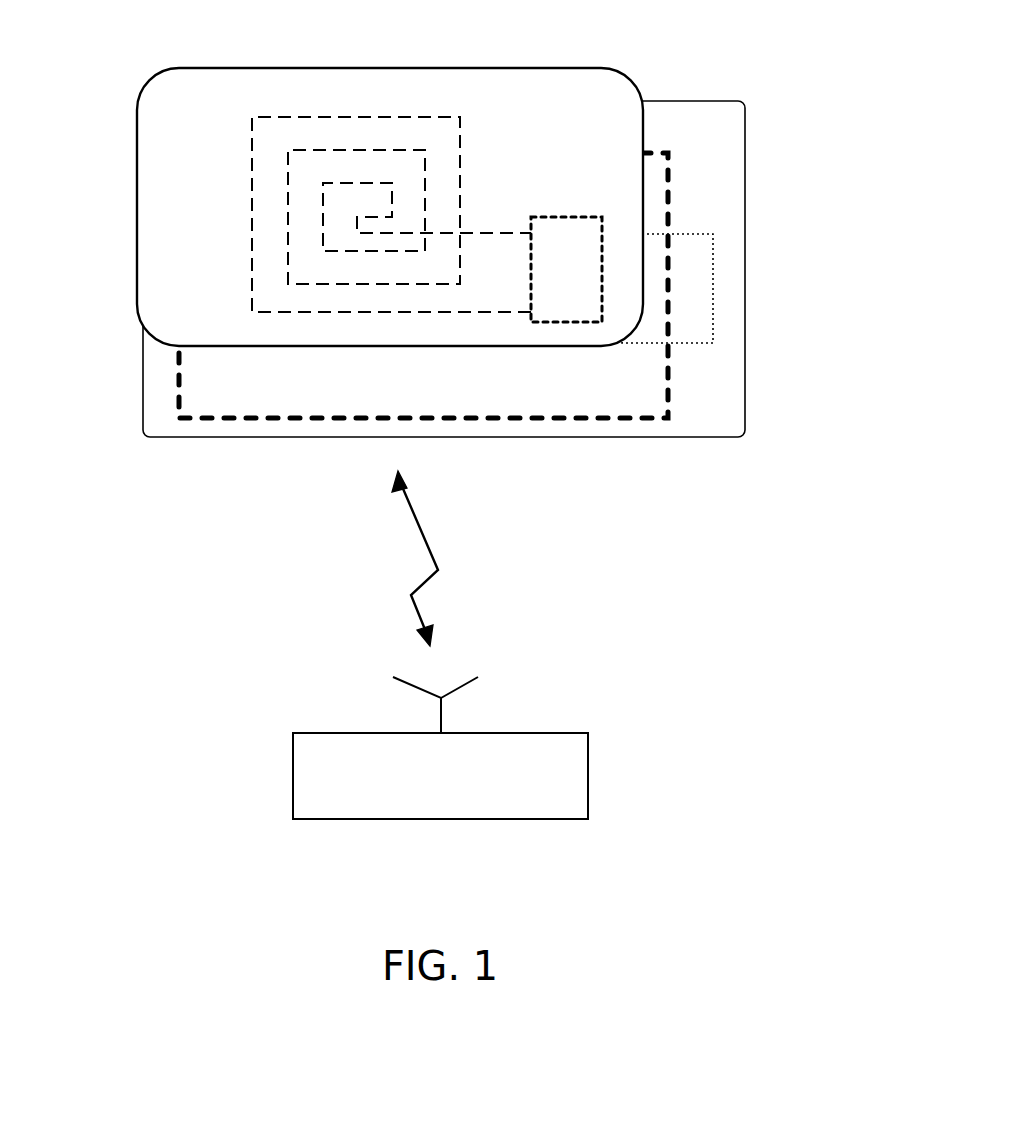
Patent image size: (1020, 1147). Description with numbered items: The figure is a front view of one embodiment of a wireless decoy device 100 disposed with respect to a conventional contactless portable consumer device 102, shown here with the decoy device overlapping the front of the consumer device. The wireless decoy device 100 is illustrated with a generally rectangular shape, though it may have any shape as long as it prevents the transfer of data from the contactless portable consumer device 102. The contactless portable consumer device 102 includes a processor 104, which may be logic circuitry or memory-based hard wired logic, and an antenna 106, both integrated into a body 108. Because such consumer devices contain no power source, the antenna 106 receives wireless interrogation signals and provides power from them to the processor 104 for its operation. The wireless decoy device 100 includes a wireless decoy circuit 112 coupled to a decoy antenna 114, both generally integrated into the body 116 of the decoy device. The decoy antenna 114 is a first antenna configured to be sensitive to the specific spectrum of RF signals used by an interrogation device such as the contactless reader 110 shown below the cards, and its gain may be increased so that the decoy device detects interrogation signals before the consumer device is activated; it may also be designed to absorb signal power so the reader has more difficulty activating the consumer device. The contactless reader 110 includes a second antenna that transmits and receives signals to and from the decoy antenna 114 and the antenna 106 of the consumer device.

The wireless decoy device 100 is at (320, 68).
The contactless portable consumer device 102 is at (745, 267).
The processor 104 is at (713, 317).
The antenna 106 is at (520, 421).
The body 108 is at (738, 437).
The contactless reader 110 is at (588, 777).
The wireless decoy circuit 112 is at (565, 215).
The decoy antenna 114 is at (423, 117).
The body 116 is at (137, 203).